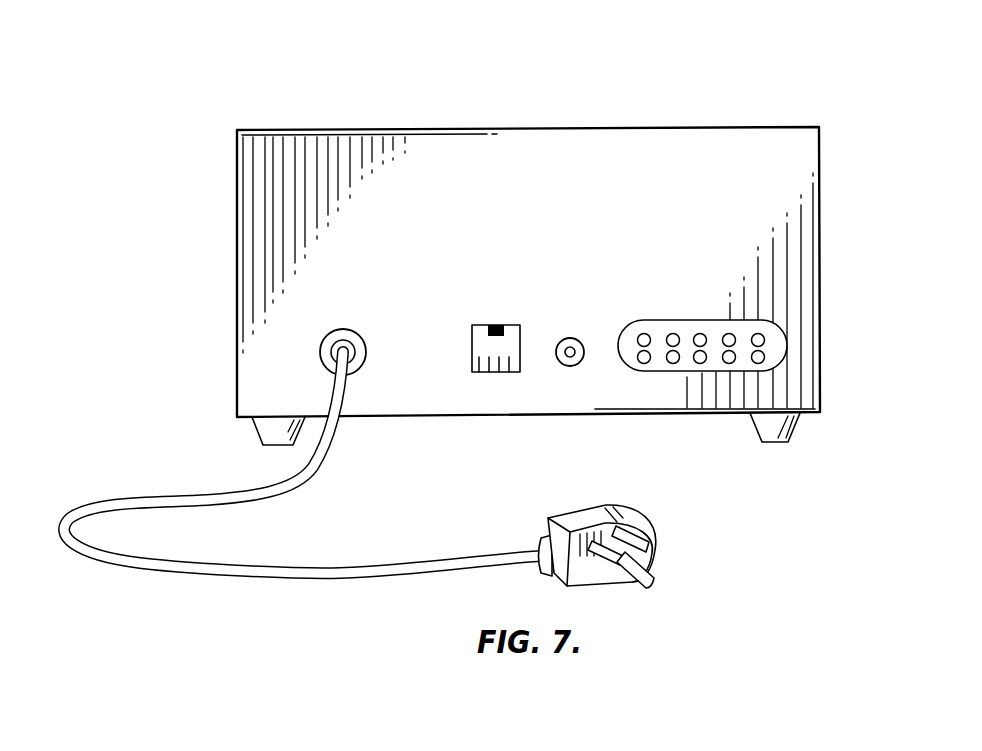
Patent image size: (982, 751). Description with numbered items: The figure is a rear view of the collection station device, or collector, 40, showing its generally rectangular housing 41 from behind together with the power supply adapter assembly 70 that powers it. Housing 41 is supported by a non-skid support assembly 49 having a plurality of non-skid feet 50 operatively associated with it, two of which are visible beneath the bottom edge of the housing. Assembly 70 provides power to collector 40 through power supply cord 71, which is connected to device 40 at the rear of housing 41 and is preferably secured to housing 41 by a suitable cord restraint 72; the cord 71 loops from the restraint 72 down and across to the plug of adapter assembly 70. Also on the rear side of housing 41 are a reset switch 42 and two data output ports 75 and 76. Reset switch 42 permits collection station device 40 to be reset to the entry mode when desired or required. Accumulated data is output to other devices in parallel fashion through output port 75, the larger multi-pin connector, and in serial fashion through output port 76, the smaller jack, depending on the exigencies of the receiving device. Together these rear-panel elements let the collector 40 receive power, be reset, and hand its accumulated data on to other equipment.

The collection station device 40 is at (528, 218).
The housing 41 is at (568, 128).
The reset switch 42 is at (578, 338).
The non-skid support assembly 49 is at (563, 447).
The non-skid feet 50 is at (756, 436).
The power supply adapter assembly 70 is at (652, 520).
The power supply cord 71 is at (357, 562).
The cord restraint 72 is at (331, 334).
The output port 75 is at (772, 342).
The output port 76 is at (472, 343).